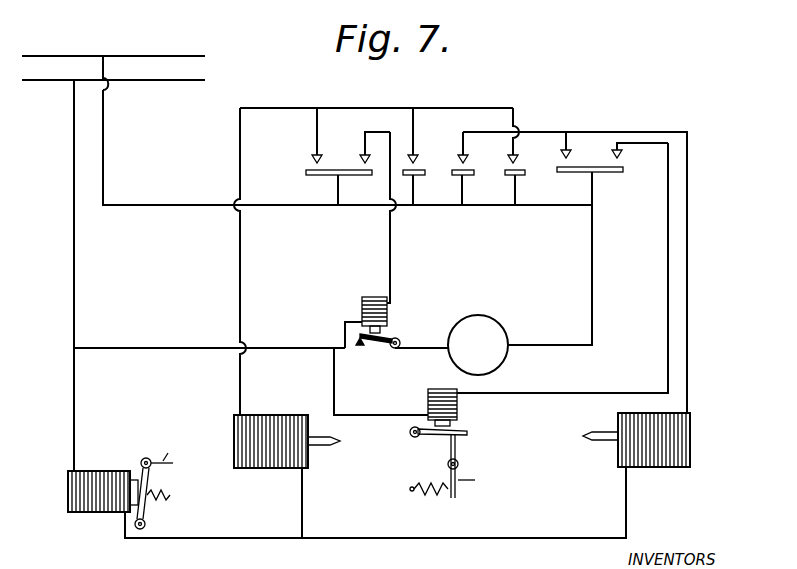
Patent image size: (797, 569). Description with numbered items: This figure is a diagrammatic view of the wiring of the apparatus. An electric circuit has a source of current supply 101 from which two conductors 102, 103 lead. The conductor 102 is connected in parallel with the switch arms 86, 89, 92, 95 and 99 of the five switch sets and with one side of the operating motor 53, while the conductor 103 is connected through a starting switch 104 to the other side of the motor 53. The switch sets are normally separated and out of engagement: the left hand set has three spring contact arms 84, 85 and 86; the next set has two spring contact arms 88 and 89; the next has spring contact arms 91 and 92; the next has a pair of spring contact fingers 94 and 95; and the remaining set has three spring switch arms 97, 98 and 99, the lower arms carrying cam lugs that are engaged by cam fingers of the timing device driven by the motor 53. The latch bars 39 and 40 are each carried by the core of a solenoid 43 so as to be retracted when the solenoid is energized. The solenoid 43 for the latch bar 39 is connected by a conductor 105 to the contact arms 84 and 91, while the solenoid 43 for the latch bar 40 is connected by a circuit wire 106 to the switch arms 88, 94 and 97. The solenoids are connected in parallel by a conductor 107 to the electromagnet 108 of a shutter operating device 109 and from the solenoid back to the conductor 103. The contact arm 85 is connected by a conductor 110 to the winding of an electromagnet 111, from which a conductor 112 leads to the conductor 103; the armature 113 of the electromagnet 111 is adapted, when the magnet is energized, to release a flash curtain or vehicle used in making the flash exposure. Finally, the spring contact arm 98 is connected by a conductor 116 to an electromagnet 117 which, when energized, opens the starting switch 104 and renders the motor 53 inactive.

The source of current supply 101 is at (115, 64).
The conductor 102 is at (104, 158).
The conductor 103 is at (73, 288).
The starting switch 104 is at (385, 350).
The conductor 105 is at (687, 192).
The circuit wire 106 is at (240, 286).
The conductor 107 is at (287, 540).
The electromagnet 108 is at (100, 512).
The shutter operating device 109 is at (148, 478).
The conductor 110 is at (620, 388).
The electromagnet 111 is at (458, 400).
The conductor 112 is at (377, 416).
The armature 113 is at (468, 436).
The conductor 116 is at (392, 256).
The electromagnet 117 is at (387, 309).
The motor 53 is at (493, 322).
The latch bar 39 is at (590, 442).
The latch bar 40 is at (338, 445).
The solenoid 43 is at (270, 470).
The spring contact arm 84 is at (572, 160).
The spring contact arm 85 is at (626, 154).
The spring contact arm 86 is at (605, 173).
The spring contact arm 88 is at (531, 135).
The spring contact arm 89 is at (520, 176).
The spring contact arm 91 is at (470, 160).
The spring contact arm 92 is at (466, 176).
The spring contact finger 94 is at (418, 160).
The spring contact finger 95 is at (418, 176).
The spring switch arm 97 is at (312, 160).
The spring switch arm 98 is at (362, 158).
The spring switch arm 99 is at (325, 176).